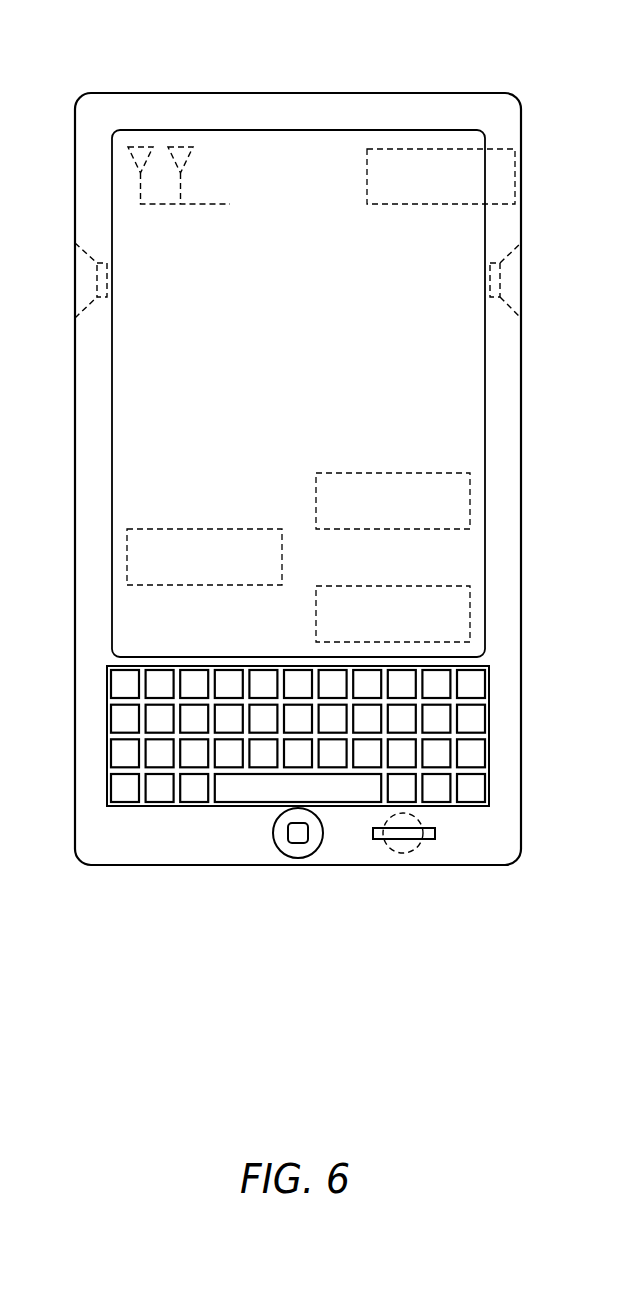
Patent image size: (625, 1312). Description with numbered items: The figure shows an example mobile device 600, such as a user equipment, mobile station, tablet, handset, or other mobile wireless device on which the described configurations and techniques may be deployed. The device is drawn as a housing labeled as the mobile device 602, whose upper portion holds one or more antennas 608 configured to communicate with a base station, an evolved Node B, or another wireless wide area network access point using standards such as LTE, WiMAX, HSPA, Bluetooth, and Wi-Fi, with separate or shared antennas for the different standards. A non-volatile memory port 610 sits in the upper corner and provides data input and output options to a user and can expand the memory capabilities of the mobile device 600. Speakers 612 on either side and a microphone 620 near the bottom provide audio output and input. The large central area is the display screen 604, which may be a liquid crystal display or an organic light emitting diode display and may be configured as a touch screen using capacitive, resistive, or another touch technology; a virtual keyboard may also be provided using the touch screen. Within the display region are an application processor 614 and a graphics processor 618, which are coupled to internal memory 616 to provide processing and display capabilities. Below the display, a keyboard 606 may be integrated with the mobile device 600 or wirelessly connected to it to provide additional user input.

The mobile device 600 is at (510, 33).
The mobile device 602 is at (298, 93).
The display screen 604 is at (466, 383).
The keyboard 606 is at (489, 735).
The antennas 608 is at (180, 147).
The non-volatile memory port 610 is at (521, 175).
The speakers 612 is at (85, 281).
The application processor 614 is at (391, 472).
The internal memory 616 is at (393, 585).
The graphics processor 618 is at (203, 528).
The microphone 620 is at (404, 853).